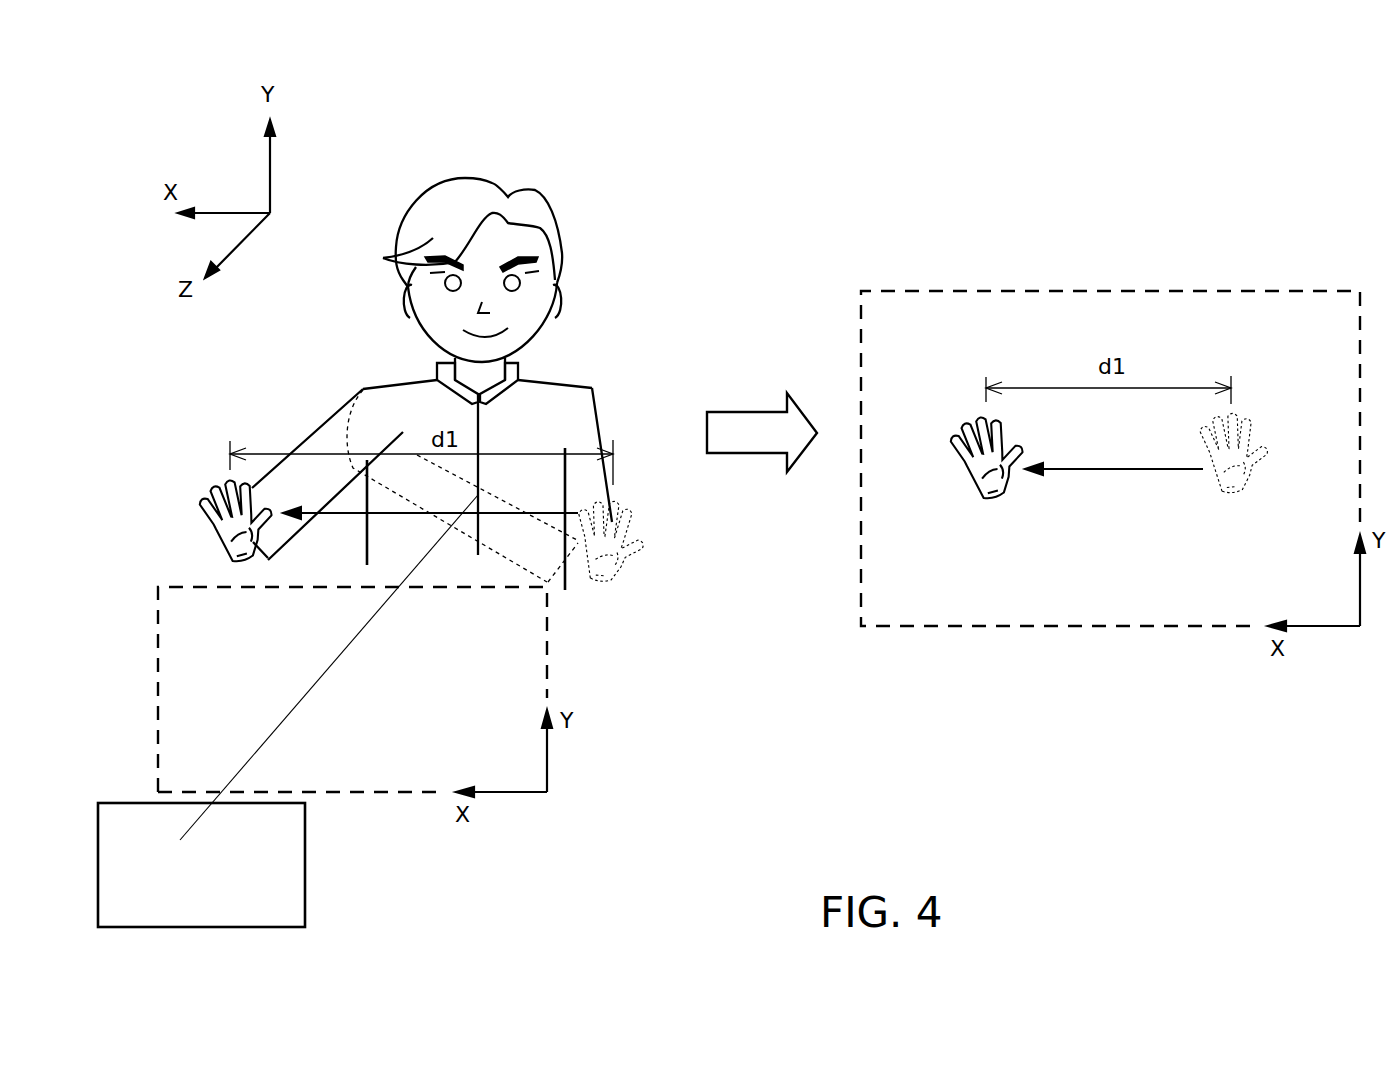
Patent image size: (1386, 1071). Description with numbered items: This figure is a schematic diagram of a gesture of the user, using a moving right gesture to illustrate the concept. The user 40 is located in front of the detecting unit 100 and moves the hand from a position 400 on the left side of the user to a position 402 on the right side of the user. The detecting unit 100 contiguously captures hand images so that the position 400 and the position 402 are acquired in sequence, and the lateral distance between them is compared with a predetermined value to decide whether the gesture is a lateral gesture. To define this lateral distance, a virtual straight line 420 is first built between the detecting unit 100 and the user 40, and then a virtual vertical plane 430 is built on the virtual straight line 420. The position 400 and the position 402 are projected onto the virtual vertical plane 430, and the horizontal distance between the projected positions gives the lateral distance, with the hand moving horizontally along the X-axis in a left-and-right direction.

The user 40 is at (545, 153).
The detecting unit 100 is at (305, 863).
The position 400 is at (634, 546).
The position 402 is at (212, 483).
The virtual straight line 420 is at (333, 665).
The virtual vertical plane 430 is at (547, 655).